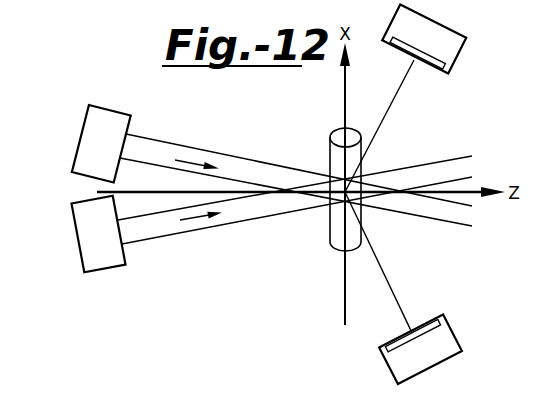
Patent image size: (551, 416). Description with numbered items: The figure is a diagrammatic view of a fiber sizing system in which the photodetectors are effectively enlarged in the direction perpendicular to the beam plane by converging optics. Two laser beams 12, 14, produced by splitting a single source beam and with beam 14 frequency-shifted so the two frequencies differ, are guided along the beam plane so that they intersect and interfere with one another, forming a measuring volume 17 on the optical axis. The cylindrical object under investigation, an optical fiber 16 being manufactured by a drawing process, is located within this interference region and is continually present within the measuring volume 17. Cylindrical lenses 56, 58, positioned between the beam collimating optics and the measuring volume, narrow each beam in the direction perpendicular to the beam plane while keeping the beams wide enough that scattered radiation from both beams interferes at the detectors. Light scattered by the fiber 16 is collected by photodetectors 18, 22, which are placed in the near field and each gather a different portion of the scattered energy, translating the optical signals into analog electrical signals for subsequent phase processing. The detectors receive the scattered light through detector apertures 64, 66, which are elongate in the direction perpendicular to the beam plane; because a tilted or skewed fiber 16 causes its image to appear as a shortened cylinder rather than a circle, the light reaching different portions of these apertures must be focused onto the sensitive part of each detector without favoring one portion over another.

The laser beam 12 is at (230, 157).
The laser beam 14 is at (178, 237).
The optical fiber 16 is at (335, 229).
The measuring volume 17 is at (323, 187).
The photodetector 18 is at (459, 27).
The photodetector 22 is at (458, 337).
The cylindrical lens 56 is at (83, 123).
The cylindrical lens 58 is at (72, 228).
The detector aperture 64 is at (428, 68).
The detector aperture 66 is at (422, 318).